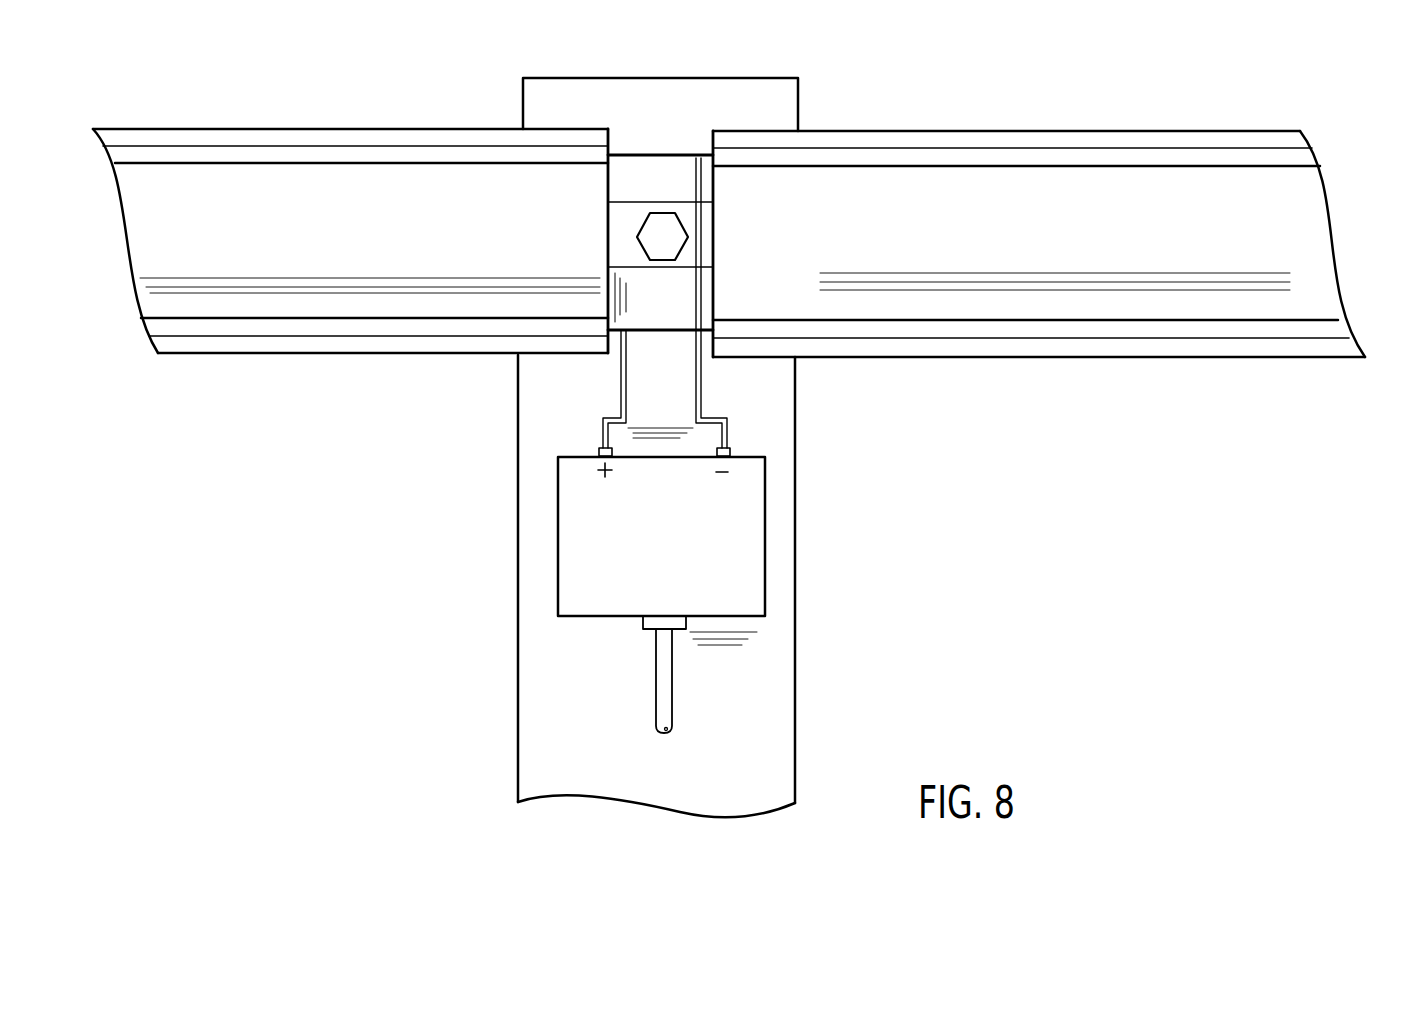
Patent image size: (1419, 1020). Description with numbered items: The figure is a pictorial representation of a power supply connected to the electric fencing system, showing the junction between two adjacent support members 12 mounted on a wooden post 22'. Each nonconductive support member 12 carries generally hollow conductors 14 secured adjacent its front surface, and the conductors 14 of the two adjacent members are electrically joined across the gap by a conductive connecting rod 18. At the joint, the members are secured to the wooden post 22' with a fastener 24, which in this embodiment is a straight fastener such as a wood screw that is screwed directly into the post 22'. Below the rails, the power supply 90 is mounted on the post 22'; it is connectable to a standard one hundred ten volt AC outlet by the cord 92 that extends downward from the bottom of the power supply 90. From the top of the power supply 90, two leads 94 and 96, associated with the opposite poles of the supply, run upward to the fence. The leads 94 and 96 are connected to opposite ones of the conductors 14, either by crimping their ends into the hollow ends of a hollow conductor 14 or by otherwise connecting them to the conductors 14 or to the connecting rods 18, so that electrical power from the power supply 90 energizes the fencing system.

The support member 12 is at (149, 218).
The conductor 14 is at (333, 155).
The connecting rod 18 is at (665, 153).
The wooden post 22' is at (711, 104).
The bolt 24 is at (640, 234).
The power supply 90 is at (768, 546).
The cord 92 is at (672, 710).
The lead 94 is at (700, 388).
The lead 96 is at (620, 393).